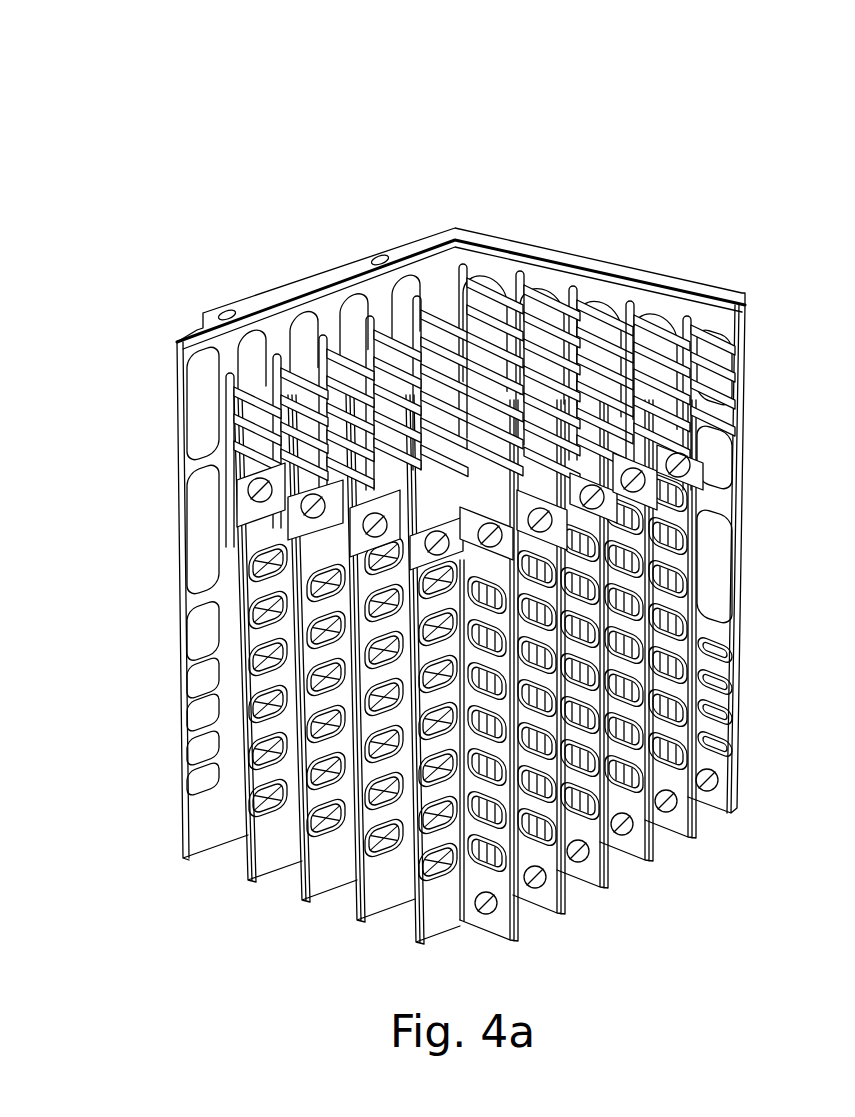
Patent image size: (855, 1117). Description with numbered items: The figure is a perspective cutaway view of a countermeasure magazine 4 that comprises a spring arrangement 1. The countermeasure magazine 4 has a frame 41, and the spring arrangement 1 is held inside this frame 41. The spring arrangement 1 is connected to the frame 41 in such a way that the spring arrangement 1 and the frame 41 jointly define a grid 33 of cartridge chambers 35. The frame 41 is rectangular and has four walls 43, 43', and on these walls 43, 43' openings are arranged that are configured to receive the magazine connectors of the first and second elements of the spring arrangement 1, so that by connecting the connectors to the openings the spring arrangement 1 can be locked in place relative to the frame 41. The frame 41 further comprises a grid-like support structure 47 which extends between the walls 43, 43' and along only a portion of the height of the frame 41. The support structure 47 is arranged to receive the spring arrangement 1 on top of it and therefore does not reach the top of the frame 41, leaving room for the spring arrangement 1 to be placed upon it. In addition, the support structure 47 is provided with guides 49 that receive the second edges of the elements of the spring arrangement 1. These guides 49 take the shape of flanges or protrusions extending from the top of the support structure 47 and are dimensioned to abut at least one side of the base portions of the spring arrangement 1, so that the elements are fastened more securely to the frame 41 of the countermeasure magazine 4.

The countermeasure magazine 4 is at (413, 521).
The frame 41 is at (512, 252).
The wall 43' is at (241, 528).
The wall 43 is at (742, 559).
The grid 33 is at (578, 286).
The support structure 47 is at (455, 920).
The cartridge chamber 35 is at (452, 272).
The spring arrangement 1 is at (636, 425).
The guide 49 is at (272, 517).